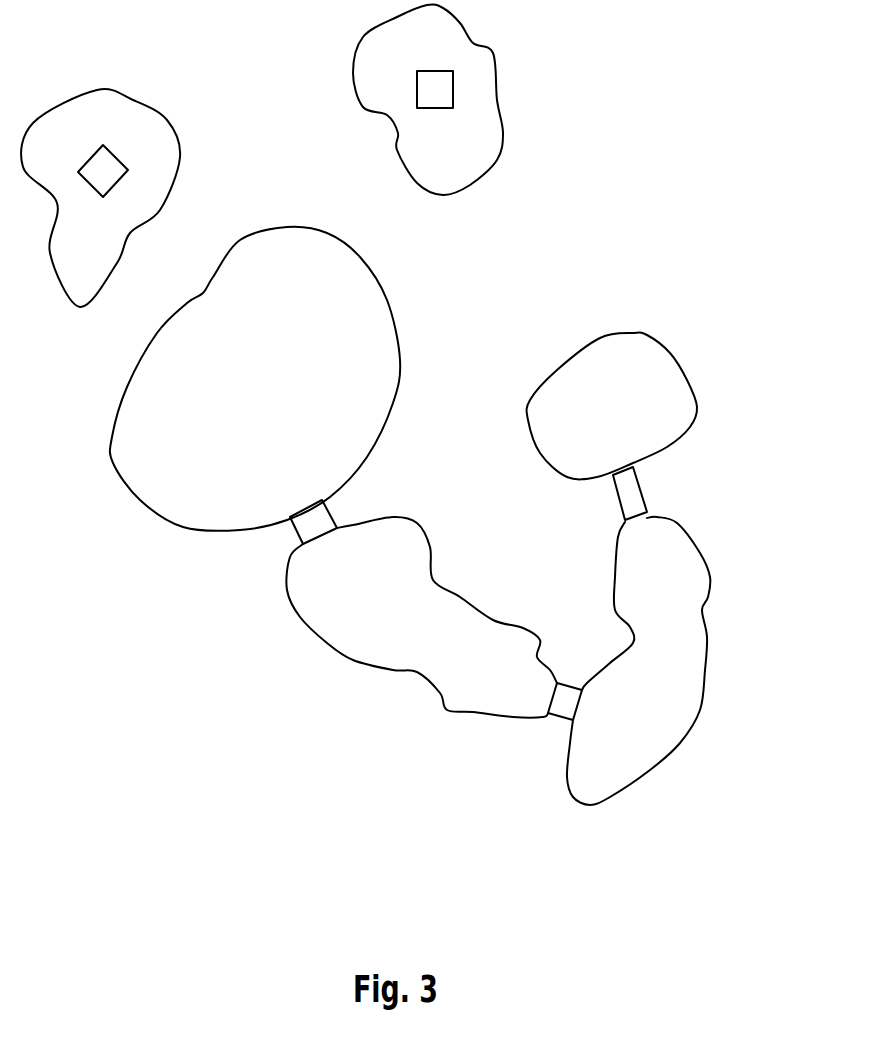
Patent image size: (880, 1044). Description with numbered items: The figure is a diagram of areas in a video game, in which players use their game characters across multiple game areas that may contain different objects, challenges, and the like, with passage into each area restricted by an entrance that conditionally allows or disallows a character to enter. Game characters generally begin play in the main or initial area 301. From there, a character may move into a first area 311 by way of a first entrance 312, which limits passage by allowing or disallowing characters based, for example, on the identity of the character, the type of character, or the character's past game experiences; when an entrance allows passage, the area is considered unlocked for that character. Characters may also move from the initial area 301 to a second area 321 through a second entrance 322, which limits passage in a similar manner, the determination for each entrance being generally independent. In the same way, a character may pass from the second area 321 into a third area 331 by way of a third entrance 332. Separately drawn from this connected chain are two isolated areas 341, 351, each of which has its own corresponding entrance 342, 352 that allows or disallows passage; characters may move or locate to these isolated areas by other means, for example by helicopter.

The initial area 301 is at (348, 658).
The first area 311 is at (110, 460).
The first entrance 312 is at (292, 532).
The second area 321 is at (682, 750).
The second entrance 322 is at (560, 720).
The third area 331 is at (697, 410).
The third entrance 332 is at (643, 488).
The isolated area 341 is at (507, 133).
The entrance 342 is at (453, 90).
The isolated area 351 is at (180, 157).
The entrance 352 is at (117, 155).